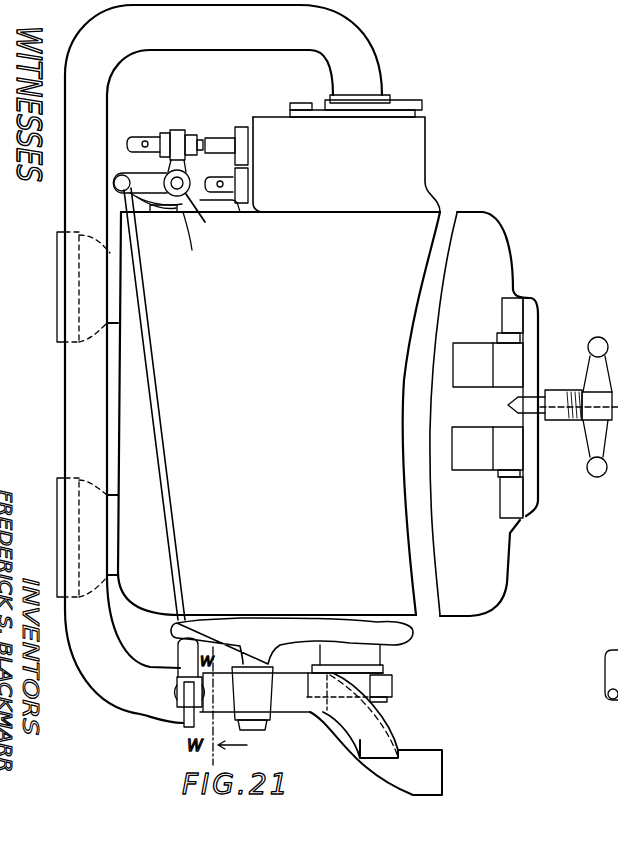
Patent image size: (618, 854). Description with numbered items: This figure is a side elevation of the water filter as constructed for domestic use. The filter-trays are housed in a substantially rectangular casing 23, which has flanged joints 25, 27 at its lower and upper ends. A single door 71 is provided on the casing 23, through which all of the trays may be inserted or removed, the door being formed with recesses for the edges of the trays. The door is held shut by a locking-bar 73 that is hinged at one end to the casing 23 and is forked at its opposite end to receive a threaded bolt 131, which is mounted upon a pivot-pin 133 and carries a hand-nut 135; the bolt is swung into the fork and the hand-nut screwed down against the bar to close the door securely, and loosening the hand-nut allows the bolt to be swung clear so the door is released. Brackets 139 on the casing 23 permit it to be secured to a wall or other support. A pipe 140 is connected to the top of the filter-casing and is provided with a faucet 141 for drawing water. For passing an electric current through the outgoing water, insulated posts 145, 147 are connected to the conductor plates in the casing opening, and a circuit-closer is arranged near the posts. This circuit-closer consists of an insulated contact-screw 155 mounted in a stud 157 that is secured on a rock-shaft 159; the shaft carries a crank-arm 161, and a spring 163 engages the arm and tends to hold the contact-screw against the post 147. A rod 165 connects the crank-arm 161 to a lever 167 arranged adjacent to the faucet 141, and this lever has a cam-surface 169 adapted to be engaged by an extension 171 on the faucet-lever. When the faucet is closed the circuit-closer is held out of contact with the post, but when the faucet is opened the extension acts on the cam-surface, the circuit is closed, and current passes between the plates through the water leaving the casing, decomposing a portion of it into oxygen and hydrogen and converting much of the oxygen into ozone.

The casing 23 is at (520, 582).
The flanged joint 25 is at (363, 656).
The flanged joint 27 is at (426, 186).
The door 71 is at (534, 510).
The locking-bar 73 is at (561, 390).
The threaded bolt 131 is at (553, 408).
The pivot-pin 133 is at (500, 410).
The hand-nut 135 is at (595, 476).
The brackets 139 is at (57, 287).
The pipe 140 is at (70, 393).
The faucet 141 is at (260, 706).
The insulated post 145 is at (233, 201).
The insulated post 147 is at (219, 140).
The contact-screw 155 is at (157, 136).
The stud 157 is at (184, 131).
The rock-shaft 159 is at (188, 196).
The crank-arm 161 is at (143, 176).
The spring 163 is at (148, 212).
The rod 165 is at (160, 423).
The lever 167 is at (184, 725).
The cam-surface 169 is at (182, 640).
The extension 171 is at (204, 626).